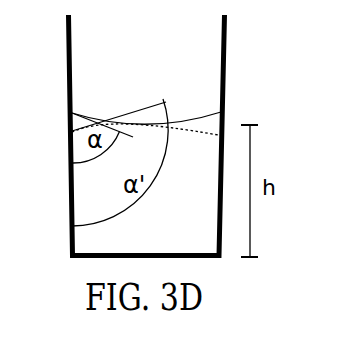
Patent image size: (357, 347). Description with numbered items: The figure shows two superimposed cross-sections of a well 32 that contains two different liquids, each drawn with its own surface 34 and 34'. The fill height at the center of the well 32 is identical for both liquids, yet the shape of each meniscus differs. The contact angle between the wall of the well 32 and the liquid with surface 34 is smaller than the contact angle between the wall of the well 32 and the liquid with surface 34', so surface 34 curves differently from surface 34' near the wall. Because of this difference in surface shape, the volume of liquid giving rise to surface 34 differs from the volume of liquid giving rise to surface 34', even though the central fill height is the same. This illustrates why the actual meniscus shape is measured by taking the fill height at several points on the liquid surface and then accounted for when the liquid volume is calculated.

The well 32 is at (68, 190).
The liquid surface 34 is at (146, 90).
The liquid surface 34' is at (145, 153).